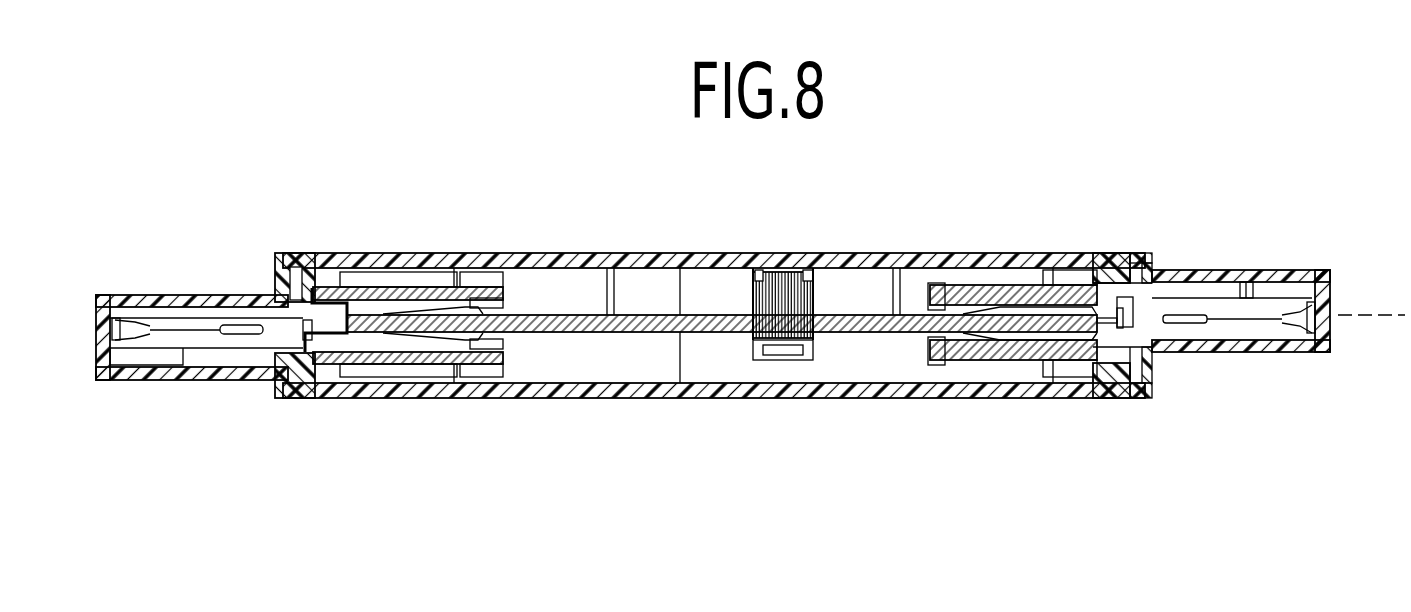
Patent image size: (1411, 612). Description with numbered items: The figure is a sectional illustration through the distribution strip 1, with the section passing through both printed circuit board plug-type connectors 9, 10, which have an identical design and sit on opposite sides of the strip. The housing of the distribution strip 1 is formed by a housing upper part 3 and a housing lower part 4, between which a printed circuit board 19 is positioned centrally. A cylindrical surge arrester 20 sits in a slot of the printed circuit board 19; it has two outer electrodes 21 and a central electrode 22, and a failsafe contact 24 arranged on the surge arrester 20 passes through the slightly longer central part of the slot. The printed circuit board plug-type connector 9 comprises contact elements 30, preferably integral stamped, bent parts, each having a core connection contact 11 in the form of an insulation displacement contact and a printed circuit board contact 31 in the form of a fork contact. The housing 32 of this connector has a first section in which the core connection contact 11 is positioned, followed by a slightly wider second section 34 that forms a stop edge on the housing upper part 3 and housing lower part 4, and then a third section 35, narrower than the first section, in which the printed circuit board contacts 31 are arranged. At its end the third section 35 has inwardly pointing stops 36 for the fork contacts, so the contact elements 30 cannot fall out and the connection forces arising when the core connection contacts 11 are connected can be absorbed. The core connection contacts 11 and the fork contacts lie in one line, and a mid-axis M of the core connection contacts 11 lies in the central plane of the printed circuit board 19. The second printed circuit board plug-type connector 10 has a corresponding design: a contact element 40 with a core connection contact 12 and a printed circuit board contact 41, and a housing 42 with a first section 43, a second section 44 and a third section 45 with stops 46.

The distribution strip 1 is at (916, 207).
The housing upper part 3 is at (633, 267).
The housing lower part 4 is at (657, 382).
The printed circuit board plug-type connector 9 is at (1208, 263).
The printed circuit board plug-type connector 10 is at (270, 410).
The core connection contact 11 is at (1237, 328).
The core connection contact 12 is at (210, 337).
The printed circuit board 19 is at (587, 330).
The surge arrester 20 is at (773, 297).
The outer electrode 21 is at (750, 302).
The central electrode 22 is at (793, 283).
The failsafe contact 24 is at (783, 357).
The contact element 30 is at (1148, 317).
The printed circuit board contact 31 is at (957, 300).
The housing 32 is at (1262, 277).
The second section 34 is at (1137, 393).
The third section 35 is at (1032, 353).
The stop 36 is at (928, 295).
The contact element 40 is at (323, 318).
The printed circuit board contact 41 is at (503, 273).
The housing 42 is at (244, 295).
The first section 43 is at (183, 295).
The second section 44 is at (305, 383).
The third section 45 is at (403, 357).
The stop 46 is at (498, 290).
The mid-axis M is at (1345, 315).